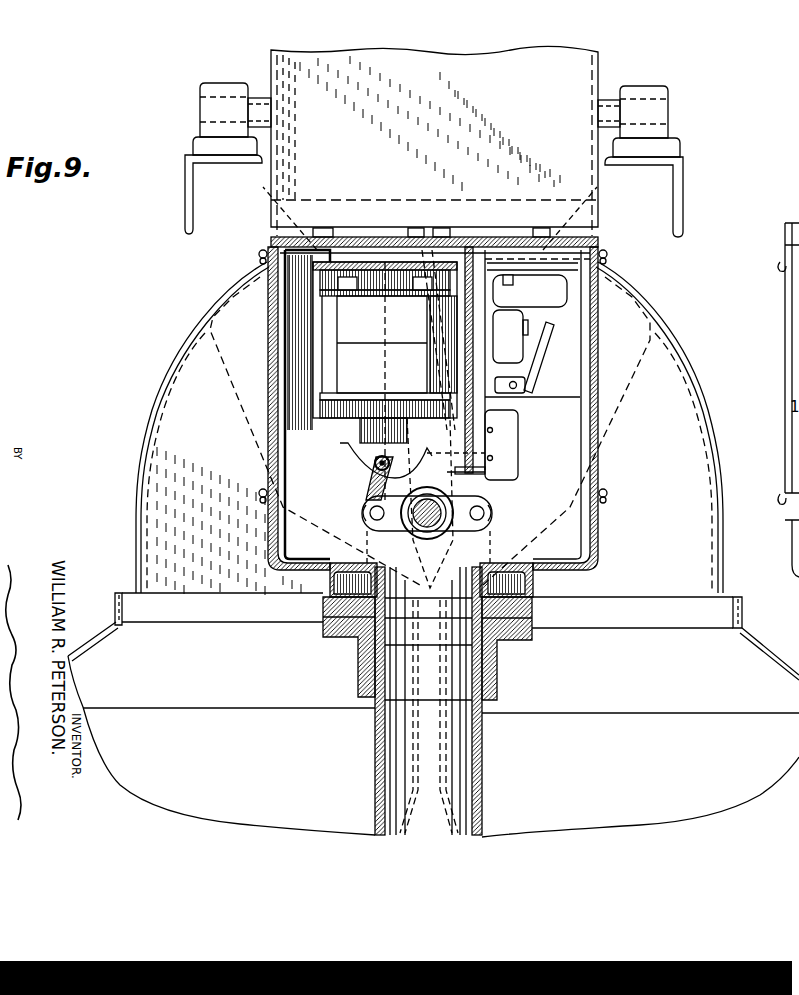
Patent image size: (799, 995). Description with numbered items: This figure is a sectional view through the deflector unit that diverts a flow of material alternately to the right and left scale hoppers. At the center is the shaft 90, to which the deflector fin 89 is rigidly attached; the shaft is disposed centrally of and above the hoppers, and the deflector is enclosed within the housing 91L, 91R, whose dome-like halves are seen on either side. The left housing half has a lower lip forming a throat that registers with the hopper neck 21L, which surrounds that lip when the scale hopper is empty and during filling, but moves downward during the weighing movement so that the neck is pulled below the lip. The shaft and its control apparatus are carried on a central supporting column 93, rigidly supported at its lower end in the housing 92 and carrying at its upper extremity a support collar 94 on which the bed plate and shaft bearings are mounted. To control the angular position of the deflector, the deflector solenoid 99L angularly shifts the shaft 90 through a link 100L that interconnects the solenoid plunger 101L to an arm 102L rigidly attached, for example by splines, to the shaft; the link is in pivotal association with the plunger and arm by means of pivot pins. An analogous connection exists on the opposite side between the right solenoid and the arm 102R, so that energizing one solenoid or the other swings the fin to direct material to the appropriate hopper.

The hopper neck 21L is at (118, 594).
The fin 89 is at (518, 441).
The shaft 90 is at (427, 533).
The housing 91L is at (164, 377).
The housing 91R is at (693, 385).
The housing 92 is at (270, 590).
The central supporting column 93 is at (375, 745).
The support collar 94 is at (358, 663).
The deflector solenoid 99L is at (360, 373).
The link 100L is at (395, 490).
The solenoid plunger 101L is at (370, 440).
The arm 102L is at (363, 517).
The arm 102R is at (492, 514).